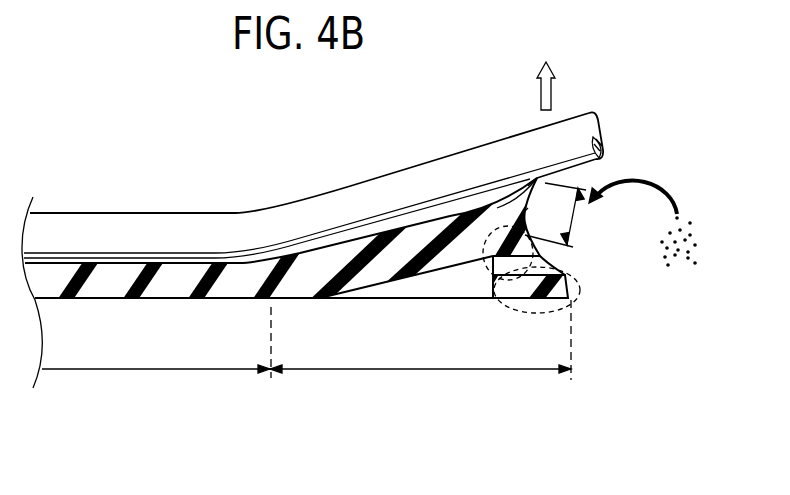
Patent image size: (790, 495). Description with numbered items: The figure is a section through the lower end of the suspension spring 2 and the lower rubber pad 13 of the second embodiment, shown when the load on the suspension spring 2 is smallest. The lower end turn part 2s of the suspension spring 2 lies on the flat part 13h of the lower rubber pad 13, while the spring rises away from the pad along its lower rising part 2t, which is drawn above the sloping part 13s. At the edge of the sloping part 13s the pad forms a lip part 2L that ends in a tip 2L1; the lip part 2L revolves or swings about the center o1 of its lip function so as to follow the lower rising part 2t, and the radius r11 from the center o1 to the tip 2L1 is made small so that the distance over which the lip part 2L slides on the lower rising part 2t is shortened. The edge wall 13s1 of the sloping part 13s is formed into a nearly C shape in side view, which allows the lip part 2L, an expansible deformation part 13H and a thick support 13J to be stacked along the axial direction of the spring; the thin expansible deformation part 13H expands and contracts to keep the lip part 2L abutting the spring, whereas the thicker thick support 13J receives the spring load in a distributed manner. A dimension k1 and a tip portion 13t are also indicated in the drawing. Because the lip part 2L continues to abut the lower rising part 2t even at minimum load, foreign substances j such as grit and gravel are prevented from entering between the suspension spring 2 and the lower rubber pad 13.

The suspension spring 2 is at (320, 185).
The lower end turn part 2s is at (122, 226).
The lower rising part 2t is at (478, 158).
The lip part 2L is at (521, 187).
The tip of the lip part 2L1 is at (541, 186).
The center of the lip function o1 is at (514, 216).
The radius r11 is at (517, 190).
The gap distance k1 is at (580, 218).
The foreign substances j is at (710, 240).
The lower rubber pad 13 is at (155, 306).
The flat part 13h is at (156, 356).
The sloping part 13s is at (420, 354).
The expansible deformation part 13H is at (480, 266).
The thick support 13J is at (493, 302).
The tip portion of base member 13t is at (511, 299).
The edge wall 13s1 is at (572, 268).